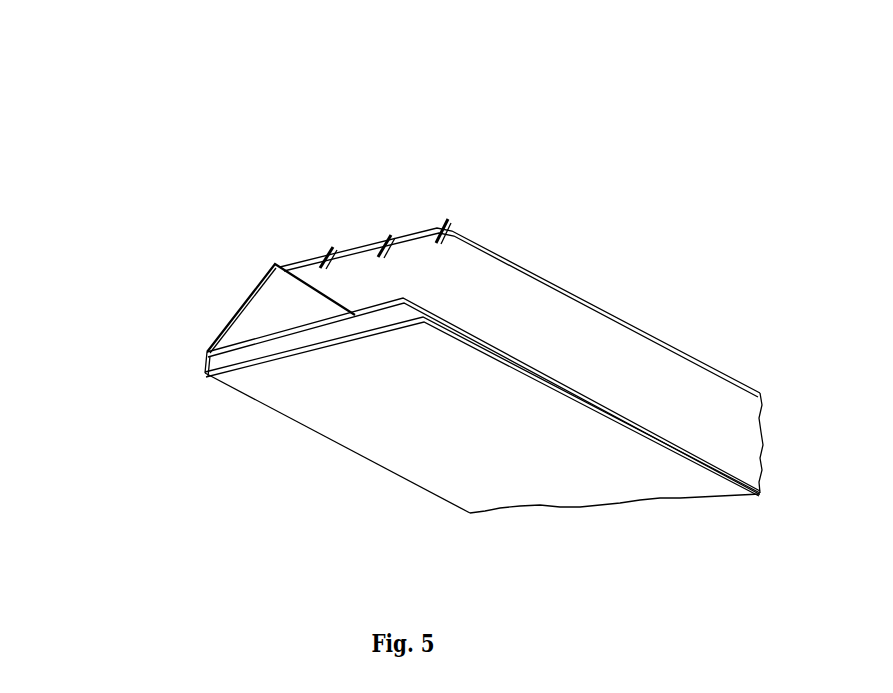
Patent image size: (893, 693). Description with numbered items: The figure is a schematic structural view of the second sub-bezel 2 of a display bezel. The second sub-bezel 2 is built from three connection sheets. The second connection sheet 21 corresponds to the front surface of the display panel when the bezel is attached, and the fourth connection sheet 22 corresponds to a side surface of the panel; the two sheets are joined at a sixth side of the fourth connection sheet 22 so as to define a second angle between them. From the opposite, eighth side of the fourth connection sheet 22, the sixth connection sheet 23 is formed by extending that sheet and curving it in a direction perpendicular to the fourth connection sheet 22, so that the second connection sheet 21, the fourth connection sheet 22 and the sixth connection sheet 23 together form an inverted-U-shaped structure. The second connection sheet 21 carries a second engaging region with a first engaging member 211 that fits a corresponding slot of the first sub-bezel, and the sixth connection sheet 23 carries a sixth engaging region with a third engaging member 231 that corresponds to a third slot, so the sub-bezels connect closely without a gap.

The second sub-bezel 2 is at (446, 140).
The second connection sheet 21 is at (377, 392).
The first engaging member 211 is at (222, 335).
The fourth connection sheet 22 is at (268, 305).
The sixth connection sheet 23 is at (567, 323).
The third engaging member 231 is at (388, 240).